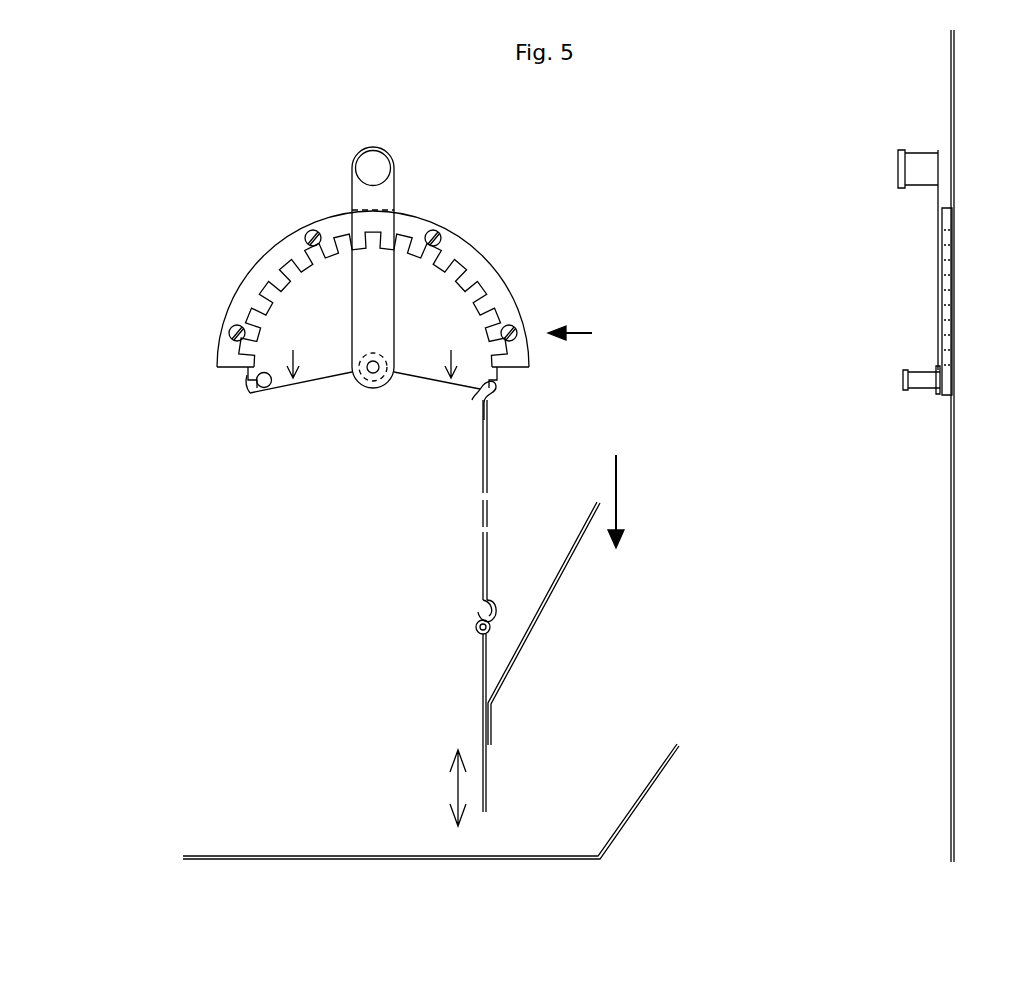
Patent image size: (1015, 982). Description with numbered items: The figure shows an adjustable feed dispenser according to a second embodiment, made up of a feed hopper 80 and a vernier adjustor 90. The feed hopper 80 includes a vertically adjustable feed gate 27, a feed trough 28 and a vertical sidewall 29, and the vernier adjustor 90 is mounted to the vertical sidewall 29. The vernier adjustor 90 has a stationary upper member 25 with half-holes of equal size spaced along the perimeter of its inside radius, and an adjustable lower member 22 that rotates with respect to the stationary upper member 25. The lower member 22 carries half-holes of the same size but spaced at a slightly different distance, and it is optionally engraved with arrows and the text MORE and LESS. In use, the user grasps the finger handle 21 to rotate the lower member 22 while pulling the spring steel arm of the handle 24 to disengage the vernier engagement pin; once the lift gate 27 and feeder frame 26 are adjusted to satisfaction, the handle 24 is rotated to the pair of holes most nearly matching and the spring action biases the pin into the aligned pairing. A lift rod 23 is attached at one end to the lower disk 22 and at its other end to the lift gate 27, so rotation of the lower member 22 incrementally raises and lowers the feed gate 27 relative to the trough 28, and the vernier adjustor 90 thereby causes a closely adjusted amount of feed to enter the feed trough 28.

The finger handle 21 is at (252, 392).
The adjustable lower member 22 is at (322, 379).
The lift rod 23 is at (476, 560).
The handle 24 is at (397, 152).
The stationary upper member 25 is at (482, 242).
The feeder frame 26 is at (556, 588).
The feed gate 27 is at (488, 779).
The feed trough 28 is at (583, 804).
The vertical sidewall 29 is at (944, 437).
The feed hopper 80 is at (537, 632).
The vernier adjustor 90 is at (582, 333).